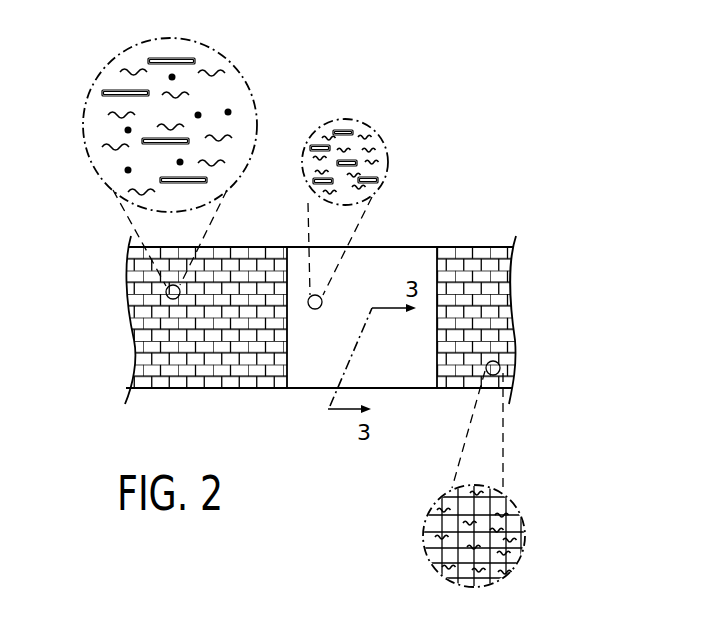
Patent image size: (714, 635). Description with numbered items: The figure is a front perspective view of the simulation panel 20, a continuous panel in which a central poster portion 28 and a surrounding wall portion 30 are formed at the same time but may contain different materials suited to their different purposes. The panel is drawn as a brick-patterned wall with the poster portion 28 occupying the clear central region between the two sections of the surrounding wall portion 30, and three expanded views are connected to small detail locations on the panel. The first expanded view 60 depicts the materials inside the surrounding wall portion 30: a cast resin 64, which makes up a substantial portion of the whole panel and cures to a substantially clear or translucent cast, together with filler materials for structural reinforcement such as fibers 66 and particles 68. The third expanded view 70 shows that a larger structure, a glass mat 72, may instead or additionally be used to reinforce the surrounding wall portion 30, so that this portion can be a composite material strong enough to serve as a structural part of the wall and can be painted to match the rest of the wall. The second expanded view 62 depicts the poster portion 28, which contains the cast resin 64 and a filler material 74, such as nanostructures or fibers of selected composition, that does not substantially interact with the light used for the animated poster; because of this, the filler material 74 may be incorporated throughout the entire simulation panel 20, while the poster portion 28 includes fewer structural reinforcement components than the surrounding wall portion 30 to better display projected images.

The simulation panel 20 is at (466, 143).
The poster portion 28 is at (310, 370).
The surrounding wall portion 30 is at (198, 360).
The first expanded view 60 is at (138, 43).
The second expanded view 62 is at (380, 180).
The cast resin 64 is at (210, 75).
The fibers 66 is at (183, 183).
The particles 68 is at (229, 111).
The third expanded view 70 is at (515, 508).
The glass mat 72 is at (498, 567).
The filler material 74 is at (346, 129).